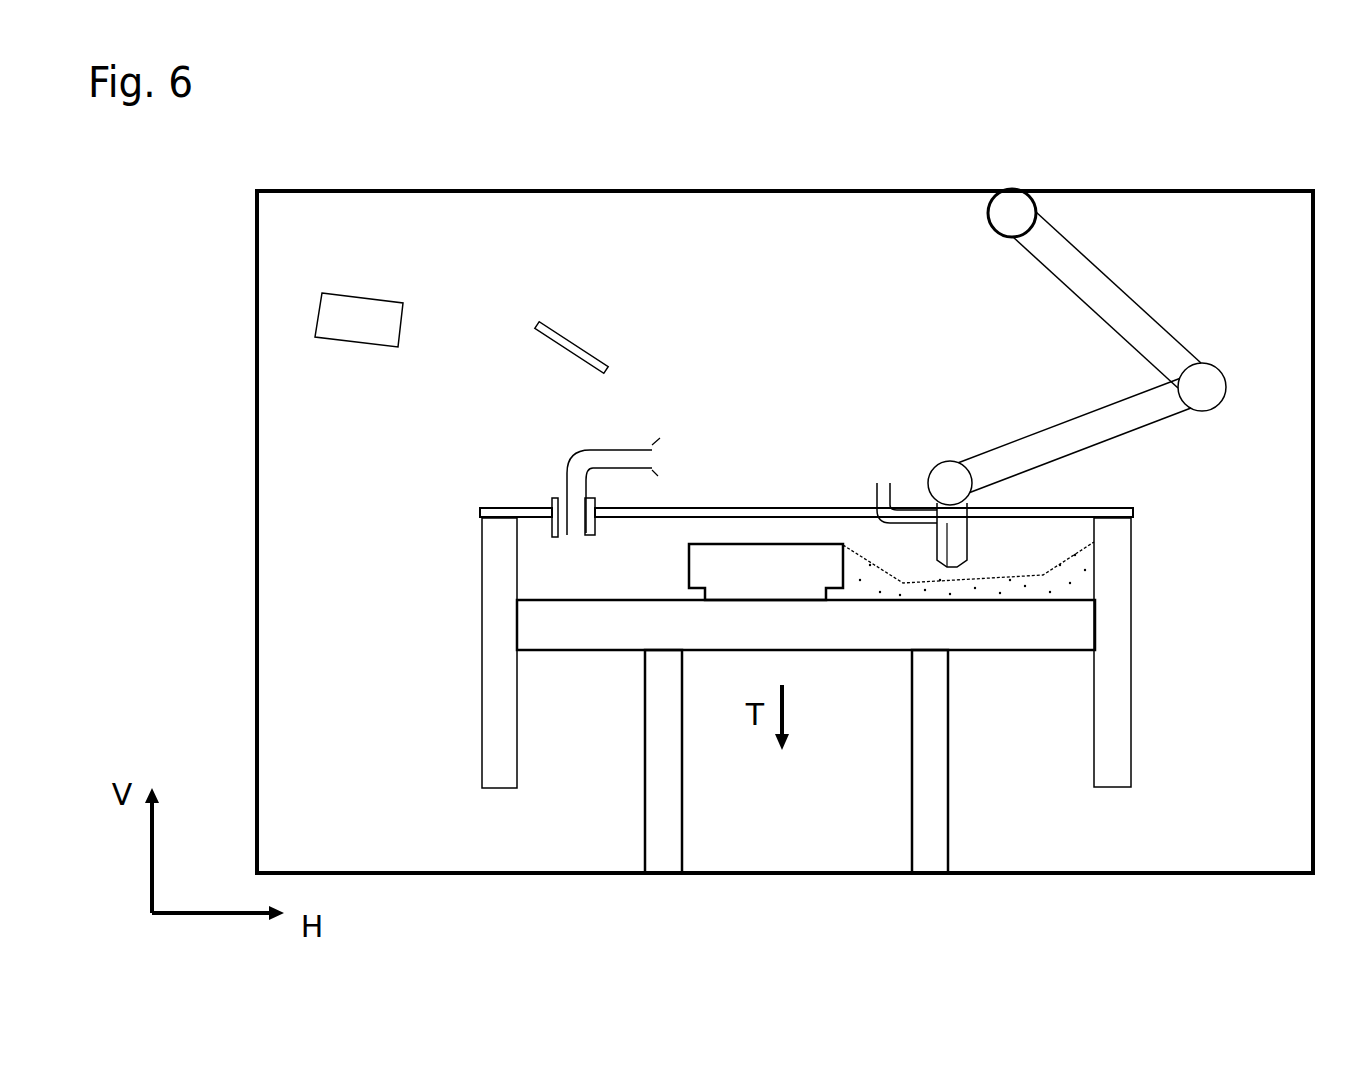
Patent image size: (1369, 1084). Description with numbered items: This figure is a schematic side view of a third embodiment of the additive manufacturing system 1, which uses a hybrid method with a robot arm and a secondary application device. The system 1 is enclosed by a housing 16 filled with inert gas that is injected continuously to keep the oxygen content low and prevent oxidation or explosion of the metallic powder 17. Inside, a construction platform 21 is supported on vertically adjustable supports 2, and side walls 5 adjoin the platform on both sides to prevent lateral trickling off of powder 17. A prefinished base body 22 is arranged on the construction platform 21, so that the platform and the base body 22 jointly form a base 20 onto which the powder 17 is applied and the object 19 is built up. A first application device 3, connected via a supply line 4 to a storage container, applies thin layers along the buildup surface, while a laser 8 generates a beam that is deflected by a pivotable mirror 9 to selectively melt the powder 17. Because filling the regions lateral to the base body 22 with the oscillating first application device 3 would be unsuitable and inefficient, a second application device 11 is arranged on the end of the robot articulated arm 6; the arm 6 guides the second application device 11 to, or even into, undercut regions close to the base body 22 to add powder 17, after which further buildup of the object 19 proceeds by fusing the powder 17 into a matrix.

The additive manufacturing system 1 is at (528, 157).
The vertically adjustable supports 2 is at (652, 770).
The first application device 3 is at (542, 497).
The supply line 4 is at (615, 452).
The side walls 5 is at (480, 642).
The robot articulated arm 6 is at (1015, 383).
The laser 8 is at (348, 337).
The pivotable mirror 9 is at (568, 337).
The second application device 11 is at (963, 537).
The housing 16 is at (807, 190).
The metallic powder 17 is at (647, 457).
The object 19 is at (793, 527).
The base 20 is at (630, 560).
The construction platform 21 is at (762, 644).
The base body 22 is at (744, 590).